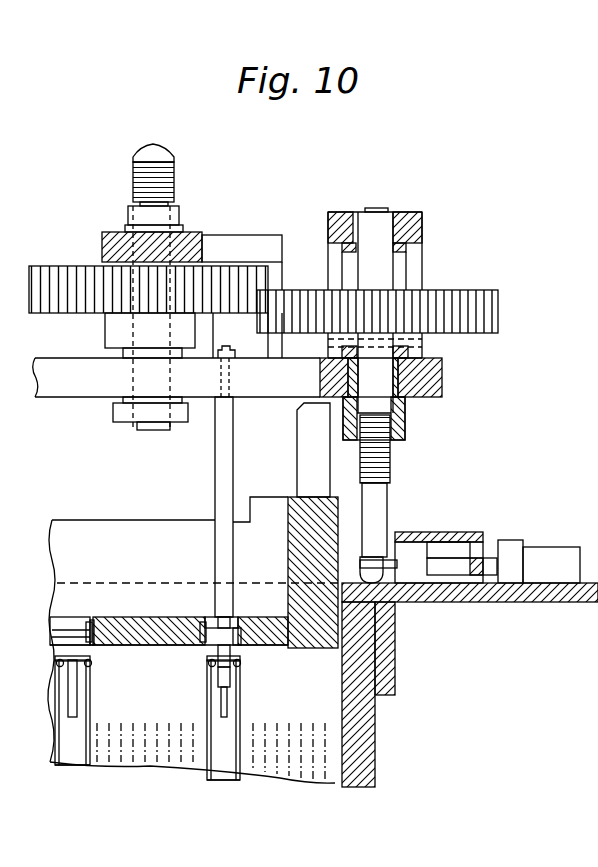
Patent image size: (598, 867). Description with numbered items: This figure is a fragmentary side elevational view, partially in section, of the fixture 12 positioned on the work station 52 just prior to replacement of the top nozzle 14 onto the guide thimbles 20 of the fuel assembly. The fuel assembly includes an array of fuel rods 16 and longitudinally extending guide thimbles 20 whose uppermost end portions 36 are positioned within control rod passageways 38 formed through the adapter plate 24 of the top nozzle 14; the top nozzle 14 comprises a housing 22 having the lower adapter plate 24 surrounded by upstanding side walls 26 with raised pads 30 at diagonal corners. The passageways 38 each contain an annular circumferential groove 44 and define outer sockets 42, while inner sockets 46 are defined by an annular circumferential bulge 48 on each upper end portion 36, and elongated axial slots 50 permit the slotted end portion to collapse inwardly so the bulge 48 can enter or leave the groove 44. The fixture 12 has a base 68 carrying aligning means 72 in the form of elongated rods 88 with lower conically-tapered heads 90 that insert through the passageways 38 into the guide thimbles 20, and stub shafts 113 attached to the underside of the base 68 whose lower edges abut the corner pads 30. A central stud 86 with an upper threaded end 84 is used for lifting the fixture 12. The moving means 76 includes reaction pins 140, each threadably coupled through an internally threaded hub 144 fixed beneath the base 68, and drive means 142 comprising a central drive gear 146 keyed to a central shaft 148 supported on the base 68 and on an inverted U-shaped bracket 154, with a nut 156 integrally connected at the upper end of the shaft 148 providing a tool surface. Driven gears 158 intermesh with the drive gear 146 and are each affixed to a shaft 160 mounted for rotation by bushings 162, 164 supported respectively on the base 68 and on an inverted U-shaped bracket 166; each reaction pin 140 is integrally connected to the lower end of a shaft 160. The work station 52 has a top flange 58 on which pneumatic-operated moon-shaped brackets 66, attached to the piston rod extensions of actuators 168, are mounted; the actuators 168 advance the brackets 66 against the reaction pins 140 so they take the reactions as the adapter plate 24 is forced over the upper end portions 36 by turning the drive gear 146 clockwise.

The fixture 12 is at (452, 380).
The top nozzle 14 is at (56, 518).
The fuel rods 16 is at (318, 786).
The guide thimbles 20 is at (90, 768).
The housing 22 is at (257, 496).
The adapter plate 24 is at (177, 617).
The side walls 26 is at (122, 520).
The pads 30 is at (338, 512).
The upper end portions 36 is at (90, 716).
The control rod passageways 38 is at (58, 619).
The outer sockets 42 is at (96, 628).
The annular circumferential groove 44 is at (94, 628).
The inner sockets 46 is at (200, 672).
The annular circumferential bulge 48 is at (91, 670).
The axial slots 50 is at (77, 688).
The work station 52 is at (402, 648).
The top flange 58 is at (545, 604).
The moon-shaped brackets 66 is at (380, 545).
The base 68 is at (60, 358).
The aligning means 72 is at (212, 492).
The moving means 76 is at (314, 220).
The upper threaded end 84 is at (175, 168).
The central stud 86 is at (180, 212).
The elongated rods 88 is at (215, 455).
The conically-tapered heads 90 is at (232, 697).
The stub shafts 113 is at (297, 442).
The reaction pins 140 is at (390, 470).
The drive means 142 is at (237, 248).
The internally threaded hub 144 is at (405, 430).
The drive gear 146 is at (74, 266).
The central shaft 148 is at (142, 426).
The inverted U-shaped bracket 154 is at (205, 235).
The nut 156 is at (128, 214).
The driven gears 158 is at (435, 290).
The shaft 160 is at (378, 212).
The bushing 162 is at (410, 220).
The bushing 164 is at (402, 382).
The inverted U-shaped bracket 166 is at (422, 242).
The actuators 168 is at (522, 540).